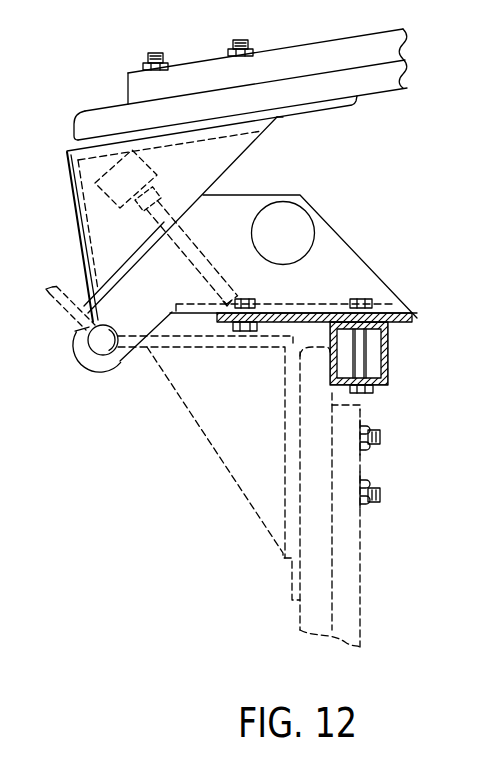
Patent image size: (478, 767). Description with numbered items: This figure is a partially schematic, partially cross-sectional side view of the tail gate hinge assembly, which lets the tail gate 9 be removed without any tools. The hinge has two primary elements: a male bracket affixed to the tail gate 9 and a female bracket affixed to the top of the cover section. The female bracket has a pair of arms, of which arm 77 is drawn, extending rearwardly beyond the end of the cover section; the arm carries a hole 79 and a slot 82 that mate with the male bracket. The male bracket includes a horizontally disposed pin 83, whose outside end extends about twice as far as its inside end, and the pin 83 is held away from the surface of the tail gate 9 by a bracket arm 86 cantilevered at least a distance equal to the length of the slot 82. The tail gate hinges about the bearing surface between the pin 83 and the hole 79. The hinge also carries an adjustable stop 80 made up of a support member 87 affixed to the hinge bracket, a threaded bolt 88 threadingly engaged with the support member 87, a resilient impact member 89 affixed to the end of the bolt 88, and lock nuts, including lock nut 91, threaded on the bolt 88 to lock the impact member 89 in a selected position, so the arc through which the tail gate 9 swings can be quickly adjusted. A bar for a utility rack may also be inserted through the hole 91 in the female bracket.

The tail gate 9 is at (100, 120).
The arm 77 is at (246, 197).
The hole 79 is at (110, 370).
The adjustable stop 80 is at (188, 206).
The slot 82 is at (78, 329).
The pin 83 is at (114, 341).
The bracket arm 86 is at (88, 290).
The support member 87 is at (228, 270).
The threaded bolt 88 is at (157, 183).
The resilient impact member 89 is at (100, 188).
The lock nut 91 is at (298, 222).